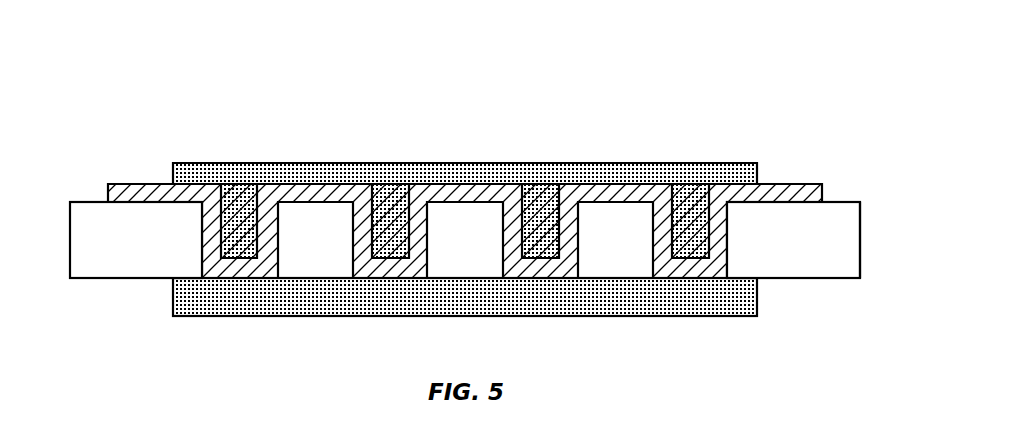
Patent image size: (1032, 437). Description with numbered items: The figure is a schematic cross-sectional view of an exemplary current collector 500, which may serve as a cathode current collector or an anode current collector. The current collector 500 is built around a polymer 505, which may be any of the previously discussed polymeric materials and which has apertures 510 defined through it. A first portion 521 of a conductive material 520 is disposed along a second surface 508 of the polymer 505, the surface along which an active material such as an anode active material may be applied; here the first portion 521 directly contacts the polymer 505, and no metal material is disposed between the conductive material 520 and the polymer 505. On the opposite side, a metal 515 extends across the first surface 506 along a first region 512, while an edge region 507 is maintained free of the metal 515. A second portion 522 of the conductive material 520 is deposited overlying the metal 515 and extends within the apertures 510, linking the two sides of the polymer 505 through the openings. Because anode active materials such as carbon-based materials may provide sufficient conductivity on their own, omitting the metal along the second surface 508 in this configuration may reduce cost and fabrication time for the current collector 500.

The current collector 500 is at (473, 202).
The polymer 505 is at (823, 279).
The first surface 506 is at (848, 201).
The edge region 507 is at (80, 202).
The second surface 508 is at (852, 279).
The apertures 510 is at (694, 180).
The first region 512 is at (543, 163).
The metal 515 is at (138, 183).
The conductive material 520 is at (372, 163).
The first portion of conductive material 521 is at (620, 317).
The second portion of conductive material 522 is at (462, 163).